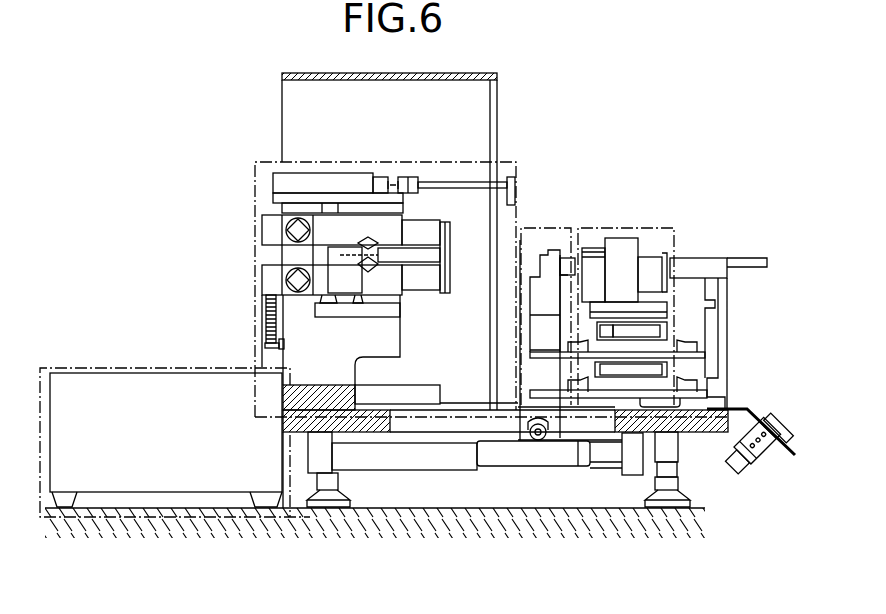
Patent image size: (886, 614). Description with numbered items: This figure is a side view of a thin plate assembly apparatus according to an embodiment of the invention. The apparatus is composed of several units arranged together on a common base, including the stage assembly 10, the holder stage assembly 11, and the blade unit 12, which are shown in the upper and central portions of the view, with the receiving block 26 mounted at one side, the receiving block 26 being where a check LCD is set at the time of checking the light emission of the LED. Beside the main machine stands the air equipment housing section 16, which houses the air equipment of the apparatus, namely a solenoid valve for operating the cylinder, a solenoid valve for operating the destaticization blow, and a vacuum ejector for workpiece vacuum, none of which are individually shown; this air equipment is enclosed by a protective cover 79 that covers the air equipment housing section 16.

The stage assembly 10 is at (606, 228).
The holder stage assembly 11 is at (546, 228).
The blade unit 12 is at (255, 200).
The air equipment housing section 16 is at (173, 368).
The receiving block 26 is at (699, 258).
The protective cover 79 is at (97, 373).